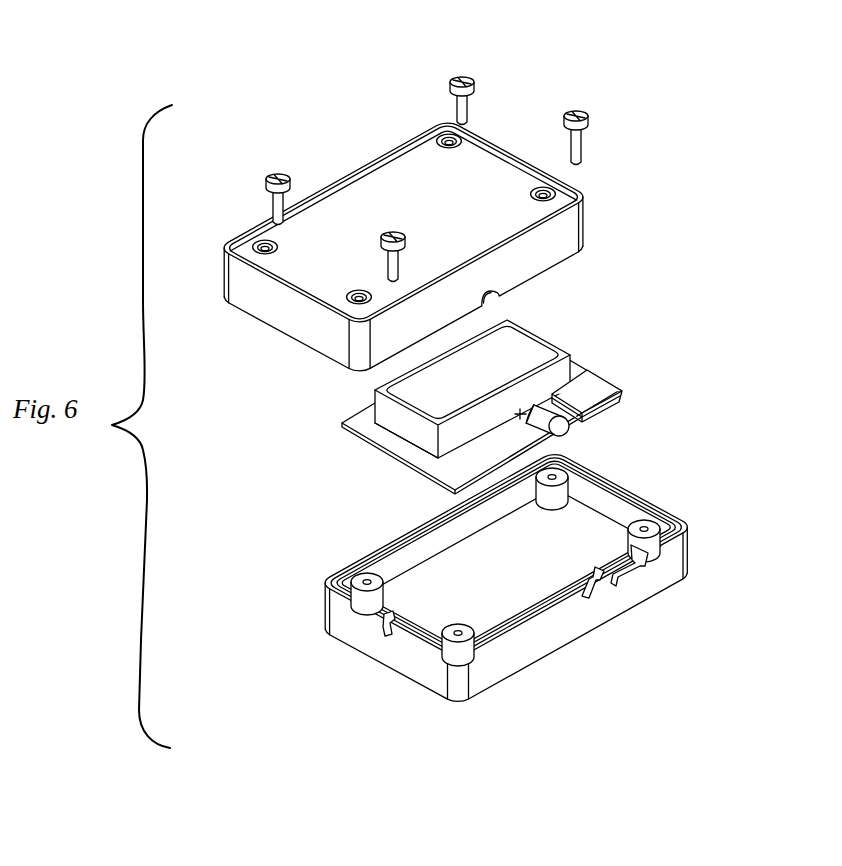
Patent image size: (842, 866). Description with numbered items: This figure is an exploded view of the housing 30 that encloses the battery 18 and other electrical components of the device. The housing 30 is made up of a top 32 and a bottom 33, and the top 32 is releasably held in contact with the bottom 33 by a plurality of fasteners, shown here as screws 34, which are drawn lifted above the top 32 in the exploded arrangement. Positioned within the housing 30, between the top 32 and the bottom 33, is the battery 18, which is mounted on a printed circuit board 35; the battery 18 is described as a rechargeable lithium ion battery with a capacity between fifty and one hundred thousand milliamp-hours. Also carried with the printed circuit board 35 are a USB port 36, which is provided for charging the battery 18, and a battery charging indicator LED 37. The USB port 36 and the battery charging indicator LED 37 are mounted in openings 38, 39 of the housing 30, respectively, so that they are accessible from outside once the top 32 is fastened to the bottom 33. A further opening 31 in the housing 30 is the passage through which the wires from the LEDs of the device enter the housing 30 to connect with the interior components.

The housing 30 is at (634, 159).
The top 32 is at (355, 192).
The screws 34 is at (282, 176).
The battery 18 is at (589, 315).
The printed circuit board 35 is at (400, 446).
The USB port 36 is at (593, 390).
The battery charging indicator LED 37 is at (563, 427).
The bottom 33 is at (543, 630).
The opening 31 is at (388, 632).
The opening 38 is at (623, 573).
The opening 39 is at (593, 590).